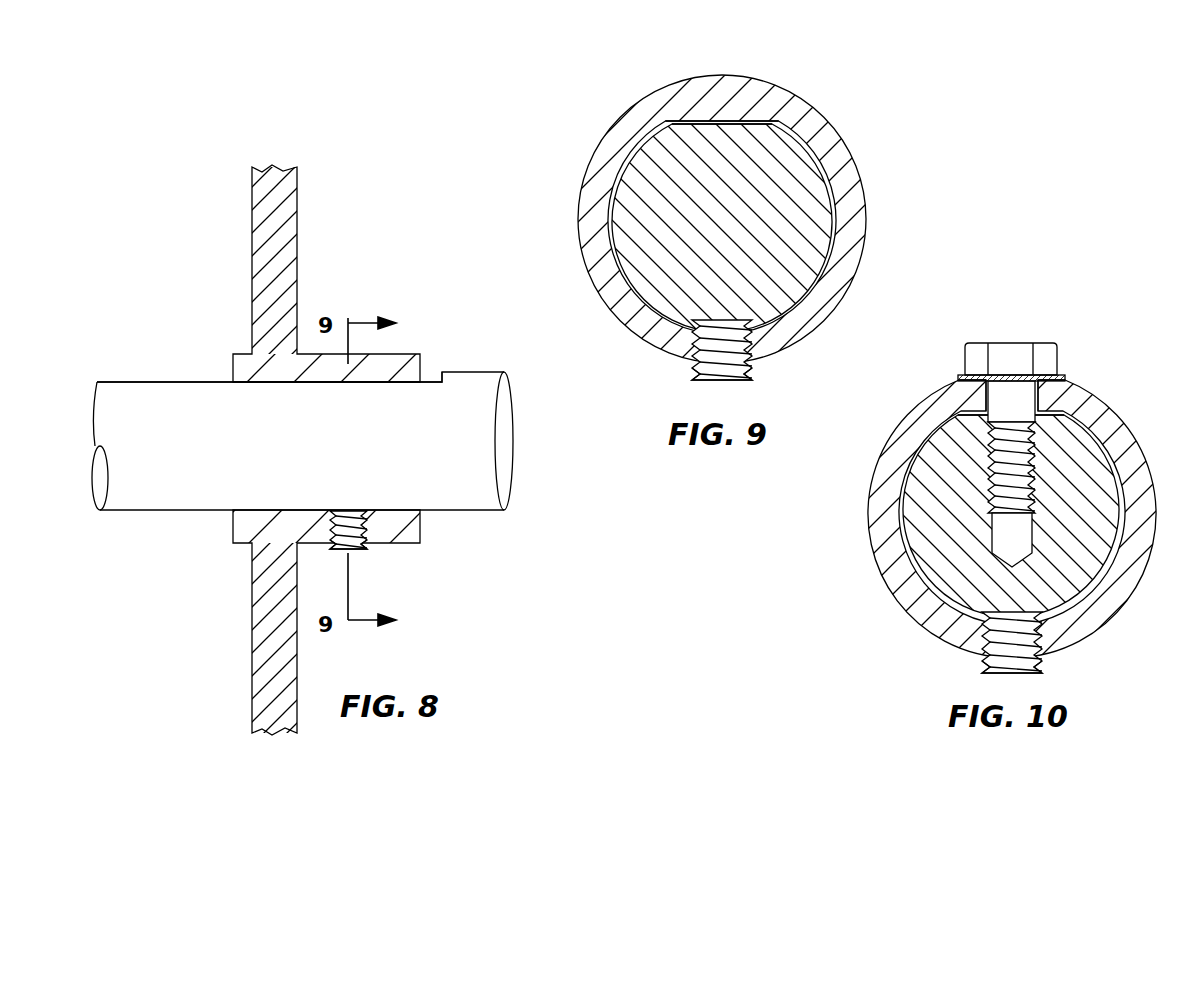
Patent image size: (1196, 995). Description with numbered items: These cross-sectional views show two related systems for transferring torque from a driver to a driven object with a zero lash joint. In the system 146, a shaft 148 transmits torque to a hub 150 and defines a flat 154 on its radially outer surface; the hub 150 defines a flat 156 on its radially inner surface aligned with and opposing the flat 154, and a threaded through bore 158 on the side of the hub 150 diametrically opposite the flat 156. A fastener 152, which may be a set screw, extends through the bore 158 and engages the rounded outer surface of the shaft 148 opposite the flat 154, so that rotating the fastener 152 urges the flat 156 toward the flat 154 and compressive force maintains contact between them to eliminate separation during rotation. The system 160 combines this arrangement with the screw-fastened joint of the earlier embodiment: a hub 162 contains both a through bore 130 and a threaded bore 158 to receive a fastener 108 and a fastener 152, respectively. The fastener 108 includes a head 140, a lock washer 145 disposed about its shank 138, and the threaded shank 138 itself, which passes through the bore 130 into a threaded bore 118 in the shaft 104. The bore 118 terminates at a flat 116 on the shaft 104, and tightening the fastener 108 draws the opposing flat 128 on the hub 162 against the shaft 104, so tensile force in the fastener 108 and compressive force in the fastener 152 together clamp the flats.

In FIG. 10, the shaft 104 is at (1068, 575).
In FIG. 10, the fastener 108 is at (1017, 437).
In FIG. 10, the flat 116 is at (1060, 388).
In FIG. 10, the threaded bore 118 is at (1000, 540).
In FIG. 10, the flat 128 is at (985, 438).
In FIG. 10, the bore 130 is at (982, 400).
In FIG. 10, the shank 138 is at (1035, 478).
In FIG. 10, the head 140 is at (1025, 352).
In FIG. 10, the lock washer 145 is at (962, 375).
In FIG. 8, the system 146 is at (240, 296).
In FIG. 9, the system 146 is at (693, 204).
In FIG. 8, the shaft 148 is at (148, 487).
In FIG. 9, the shaft 148 is at (640, 272).
In FIG. 8, the hub 150 is at (255, 527).
In FIG. 9, the hub 150 is at (660, 328).
In FIG. 8, the fastener 152 is at (352, 549).
In FIG. 9, the fastener 152 is at (735, 368).
In FIG. 10, the fastener 152 is at (1025, 666).
In FIG. 8, the flat 154 is at (432, 381).
In FIG. 9, the flat 154 is at (731, 122).
In FIG. 8, the flat 156 is at (290, 385).
In FIG. 9, the flat 156 is at (737, 124).
In FIG. 8, the threaded through bore 158 is at (348, 549).
In FIG. 9, the threaded through bore 158 is at (705, 342).
In FIG. 10, the threaded through bore 158 is at (985, 634).
In FIG. 10, the system 160 is at (1021, 459).
In FIG. 10, the hub 162 is at (1132, 570).